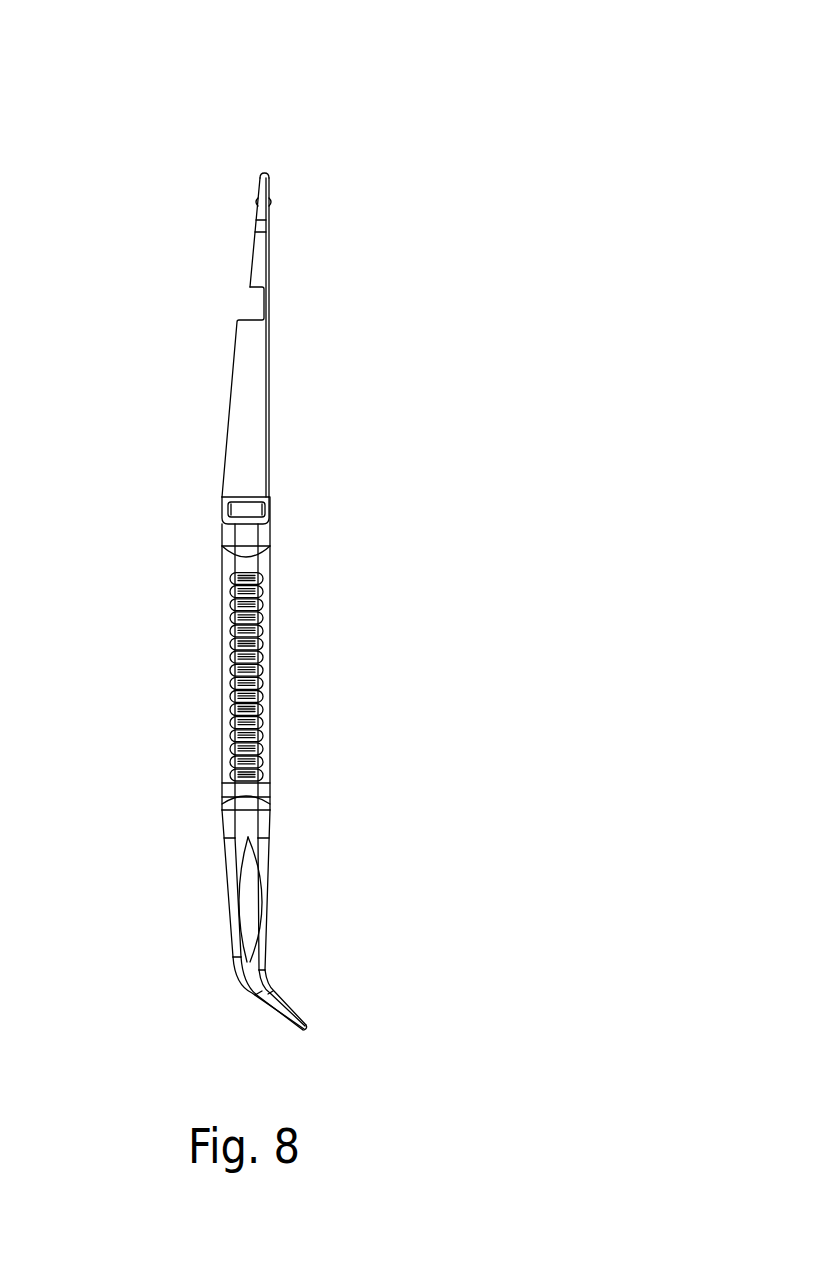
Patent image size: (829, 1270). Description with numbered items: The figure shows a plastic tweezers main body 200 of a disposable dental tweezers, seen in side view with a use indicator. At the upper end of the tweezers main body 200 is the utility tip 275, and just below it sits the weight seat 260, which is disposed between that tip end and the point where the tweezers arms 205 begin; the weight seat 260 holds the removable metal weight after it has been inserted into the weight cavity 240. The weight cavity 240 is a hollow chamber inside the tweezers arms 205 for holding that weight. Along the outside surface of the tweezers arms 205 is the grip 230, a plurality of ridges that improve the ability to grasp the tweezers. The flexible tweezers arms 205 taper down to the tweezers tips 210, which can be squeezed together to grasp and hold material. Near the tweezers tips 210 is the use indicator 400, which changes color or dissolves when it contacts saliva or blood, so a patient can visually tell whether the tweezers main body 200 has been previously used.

The tweezers main body 200 is at (260, 517).
The utility tip 275 is at (266, 190).
The weight seat 260 is at (242, 308).
The weight cavity 240 is at (253, 509).
The tweezers arms 205 is at (227, 620).
The grip 230 is at (255, 632).
The use indicator 400 is at (243, 892).
The tweezers tips 210 is at (277, 998).